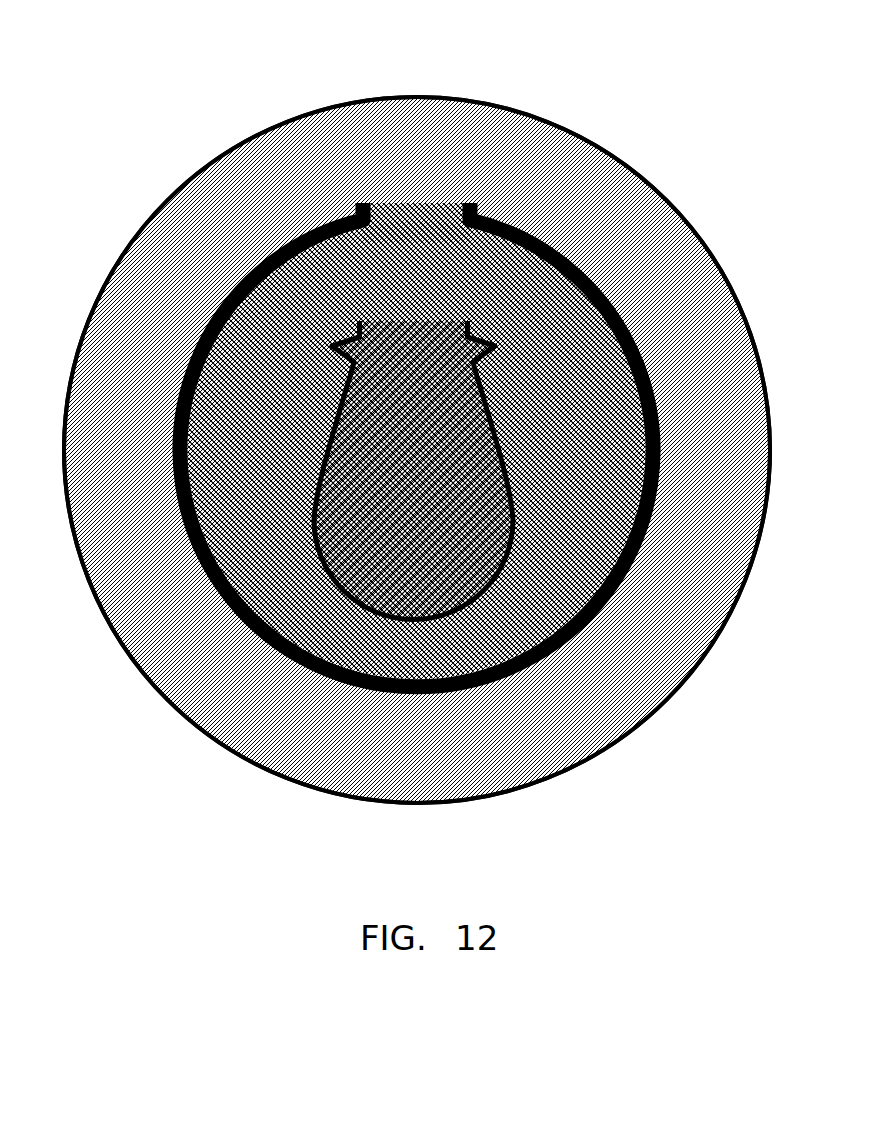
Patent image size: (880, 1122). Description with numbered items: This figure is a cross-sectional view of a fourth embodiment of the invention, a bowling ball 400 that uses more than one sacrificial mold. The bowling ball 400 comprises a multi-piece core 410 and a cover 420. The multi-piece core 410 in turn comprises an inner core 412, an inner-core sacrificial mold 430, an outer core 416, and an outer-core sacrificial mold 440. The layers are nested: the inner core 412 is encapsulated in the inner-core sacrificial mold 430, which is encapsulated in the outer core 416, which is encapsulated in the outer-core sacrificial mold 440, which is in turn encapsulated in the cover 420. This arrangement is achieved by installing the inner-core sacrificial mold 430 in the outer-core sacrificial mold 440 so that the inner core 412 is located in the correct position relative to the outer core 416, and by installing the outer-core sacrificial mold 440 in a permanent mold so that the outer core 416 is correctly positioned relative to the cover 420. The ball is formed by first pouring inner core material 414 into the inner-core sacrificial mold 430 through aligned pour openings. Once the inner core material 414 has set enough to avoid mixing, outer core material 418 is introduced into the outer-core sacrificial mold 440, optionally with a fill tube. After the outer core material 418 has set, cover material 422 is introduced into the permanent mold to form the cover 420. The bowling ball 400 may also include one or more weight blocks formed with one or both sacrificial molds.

The bowling ball 400 is at (416, 443).
The multi-piece core 410 is at (407, 460).
The inner core 412 is at (543, 573).
The inner core material 414 is at (440, 557).
The outer core 416 is at (325, 630).
The outer core material 418 is at (362, 538).
The cover 420 is at (434, 450).
The cover material 422 is at (657, 191).
The inner-core sacrificial mold 430 is at (550, 528).
The outer-core sacrificial mold 440 is at (178, 505).